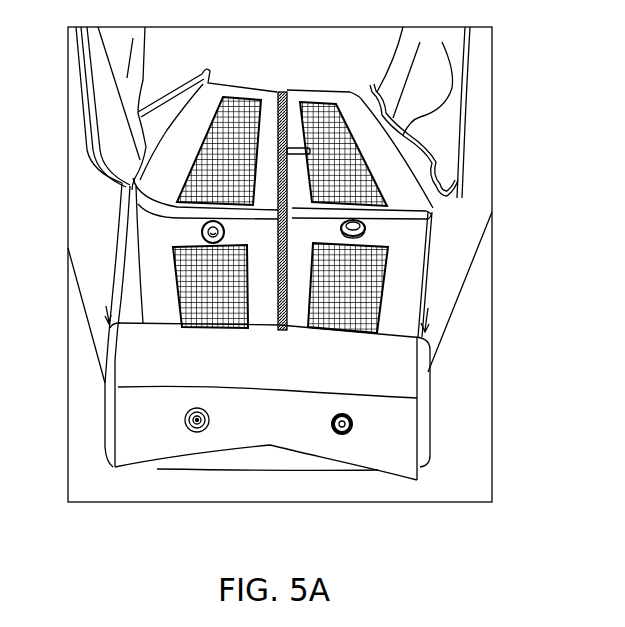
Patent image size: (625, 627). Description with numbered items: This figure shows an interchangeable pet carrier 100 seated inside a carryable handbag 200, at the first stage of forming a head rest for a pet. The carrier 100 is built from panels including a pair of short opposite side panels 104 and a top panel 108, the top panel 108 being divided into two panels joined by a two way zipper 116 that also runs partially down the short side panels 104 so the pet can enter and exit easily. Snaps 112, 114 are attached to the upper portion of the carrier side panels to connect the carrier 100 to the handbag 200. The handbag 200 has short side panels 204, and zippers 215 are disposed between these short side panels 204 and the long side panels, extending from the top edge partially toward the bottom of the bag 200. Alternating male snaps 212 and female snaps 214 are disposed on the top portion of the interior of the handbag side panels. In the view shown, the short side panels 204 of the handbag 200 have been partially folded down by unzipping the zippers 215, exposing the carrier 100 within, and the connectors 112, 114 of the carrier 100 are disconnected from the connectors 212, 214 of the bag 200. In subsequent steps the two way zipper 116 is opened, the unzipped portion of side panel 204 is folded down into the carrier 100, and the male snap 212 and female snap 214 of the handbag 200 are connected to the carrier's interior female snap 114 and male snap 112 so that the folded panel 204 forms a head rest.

The interchangeable pet carrier 100 is at (407, 290).
The short opposite side panels 104 is at (408, 262).
The top panel 108 is at (190, 160).
The snap 112 is at (365, 228).
The snap 114 is at (202, 233).
The zipper 116 is at (283, 92).
The handbag 200 is at (97, 197).
The short side panels 204 is at (143, 435).
The male snap 212 is at (203, 432).
The female snap 214 is at (346, 434).
The zipper 215 is at (113, 297).